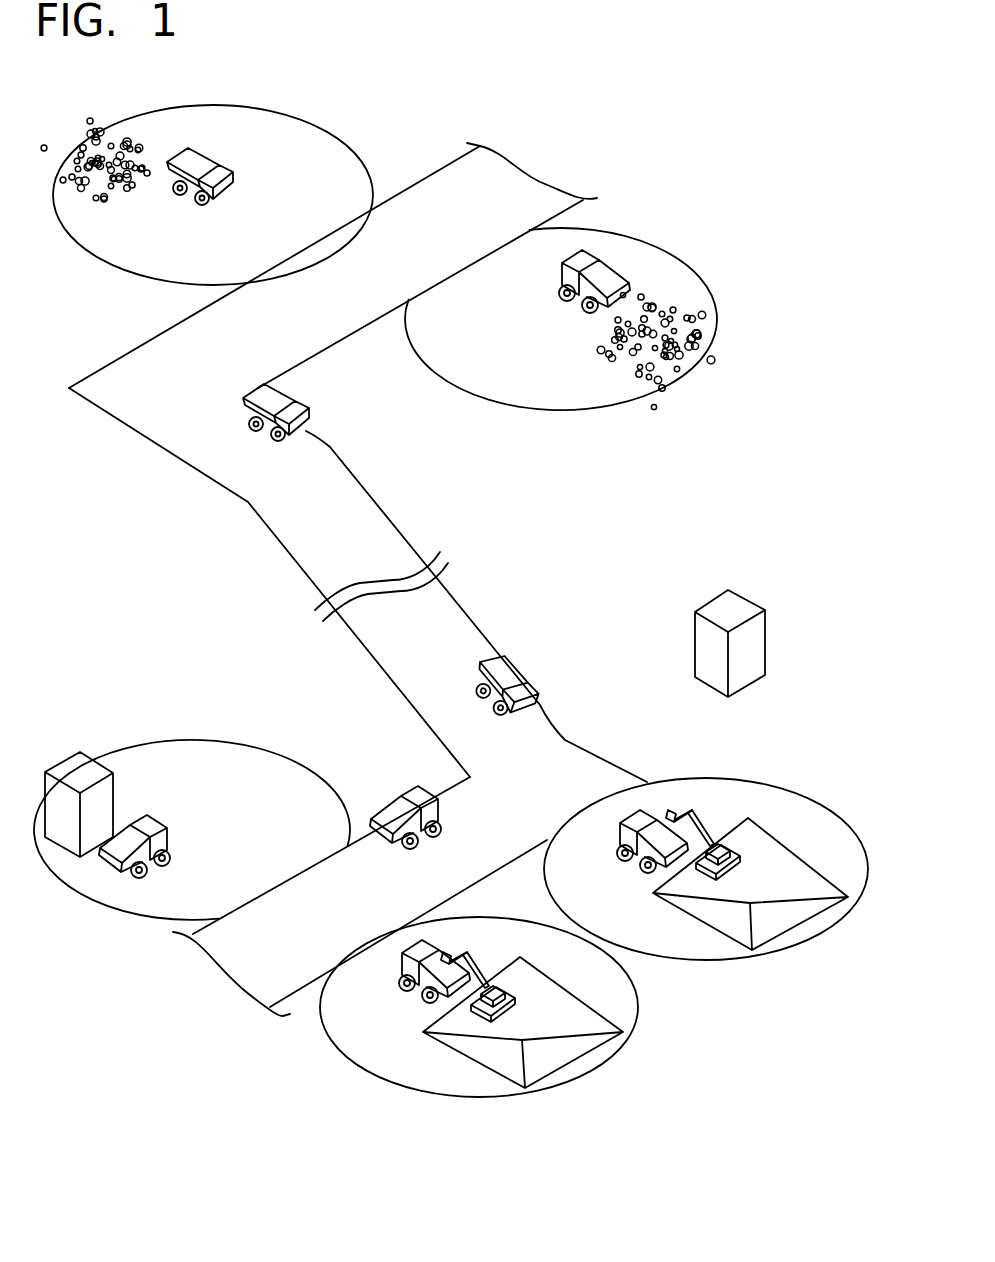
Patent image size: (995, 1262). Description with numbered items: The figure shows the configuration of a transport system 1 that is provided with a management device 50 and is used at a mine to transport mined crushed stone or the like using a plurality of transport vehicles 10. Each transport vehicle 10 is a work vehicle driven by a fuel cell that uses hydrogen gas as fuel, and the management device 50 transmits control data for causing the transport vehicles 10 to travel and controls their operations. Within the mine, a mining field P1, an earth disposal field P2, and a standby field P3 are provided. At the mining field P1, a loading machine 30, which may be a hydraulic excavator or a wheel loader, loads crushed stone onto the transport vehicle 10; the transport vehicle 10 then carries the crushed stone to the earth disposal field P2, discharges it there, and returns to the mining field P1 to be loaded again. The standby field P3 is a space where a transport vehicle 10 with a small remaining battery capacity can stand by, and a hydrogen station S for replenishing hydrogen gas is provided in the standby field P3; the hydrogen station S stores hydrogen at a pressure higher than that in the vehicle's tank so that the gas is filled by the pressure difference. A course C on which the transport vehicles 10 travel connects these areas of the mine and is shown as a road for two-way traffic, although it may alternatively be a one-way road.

The transport system 1 is at (731, 148).
The transport vehicle 10 is at (172, 198).
The loading machine 30 is at (702, 800).
The management device 50 is at (742, 598).
The course C is at (460, 604).
The mining field P1 is at (828, 806).
The earth disposal field P2 is at (320, 127).
The standby field P3 is at (235, 740).
The hydrogen station S is at (75, 763).